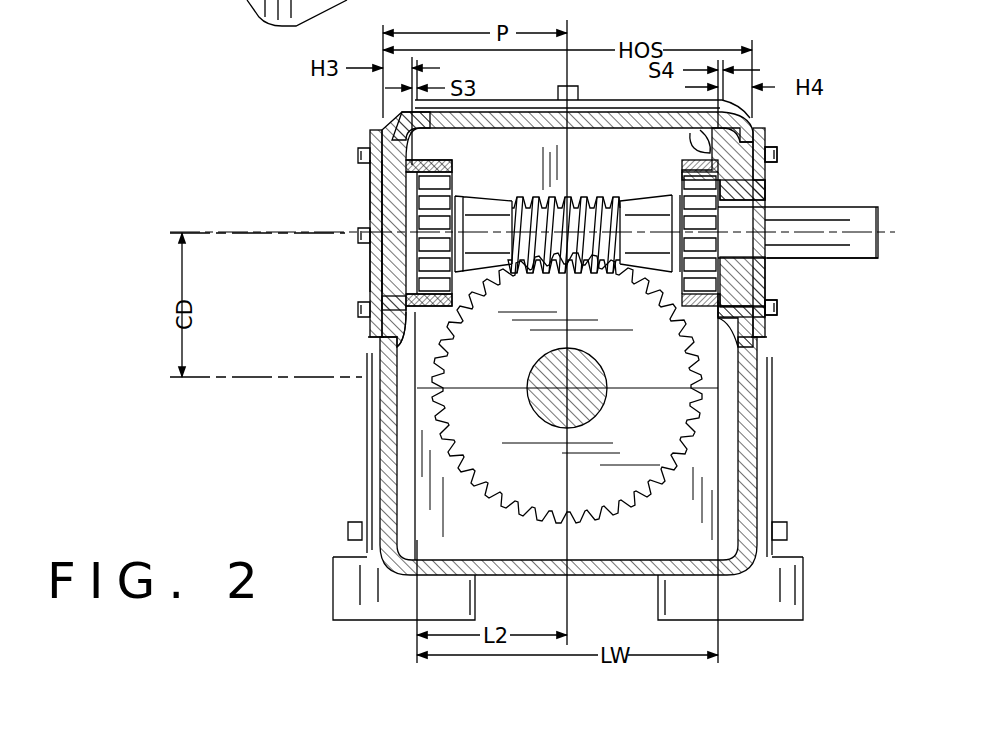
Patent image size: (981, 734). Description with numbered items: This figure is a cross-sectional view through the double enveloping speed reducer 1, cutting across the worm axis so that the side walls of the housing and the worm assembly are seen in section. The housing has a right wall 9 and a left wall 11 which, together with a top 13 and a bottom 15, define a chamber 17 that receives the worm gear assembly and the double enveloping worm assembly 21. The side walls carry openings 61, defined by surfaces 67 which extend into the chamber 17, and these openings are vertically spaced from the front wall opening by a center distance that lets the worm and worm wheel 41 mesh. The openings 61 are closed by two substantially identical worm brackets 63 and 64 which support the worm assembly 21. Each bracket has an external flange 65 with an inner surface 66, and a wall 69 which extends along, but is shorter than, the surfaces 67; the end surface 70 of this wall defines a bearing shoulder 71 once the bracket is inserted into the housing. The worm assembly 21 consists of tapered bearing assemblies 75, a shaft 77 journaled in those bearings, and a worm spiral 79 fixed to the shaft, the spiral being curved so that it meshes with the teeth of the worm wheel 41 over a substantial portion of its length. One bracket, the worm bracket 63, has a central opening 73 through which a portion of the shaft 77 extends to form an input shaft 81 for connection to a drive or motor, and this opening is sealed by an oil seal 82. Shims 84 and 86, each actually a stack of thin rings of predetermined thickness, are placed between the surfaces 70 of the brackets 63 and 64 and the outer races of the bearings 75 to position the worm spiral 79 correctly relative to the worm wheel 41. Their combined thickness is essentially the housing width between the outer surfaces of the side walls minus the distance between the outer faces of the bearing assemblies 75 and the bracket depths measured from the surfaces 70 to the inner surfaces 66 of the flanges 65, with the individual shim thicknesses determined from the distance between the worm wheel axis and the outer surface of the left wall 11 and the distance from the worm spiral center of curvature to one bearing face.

The double enveloping speed reducer 1 is at (772, 54).
The right wall 9 is at (777, 312).
The left wall 11 is at (372, 140).
The top 13 is at (587, 113).
The bottom 15 is at (597, 577).
The chamber 17 is at (437, 487).
The double enveloping worm assembly 21 is at (592, 190).
The worm wheel 41 is at (517, 365).
The openings 61 is at (367, 178).
The worm bracket 63 is at (767, 178).
The worm bracket 64 is at (370, 258).
The external flanges 65 is at (370, 328).
The inner surfaces 66 is at (380, 337).
The surfaces 67 is at (477, 308).
The wall 69 is at (370, 278).
The end surface 70 is at (398, 345).
The bearing shoulders 71 is at (432, 165).
The central opening 73 is at (765, 205).
The tapered bearing assemblies 75 is at (455, 180).
The shaft 77 is at (770, 170).
The worm spiral 79 is at (545, 205).
The input shaft 81 is at (848, 204).
The oil seal 82 is at (767, 267).
The shim 84 is at (370, 187).
The shim 86 is at (777, 150).